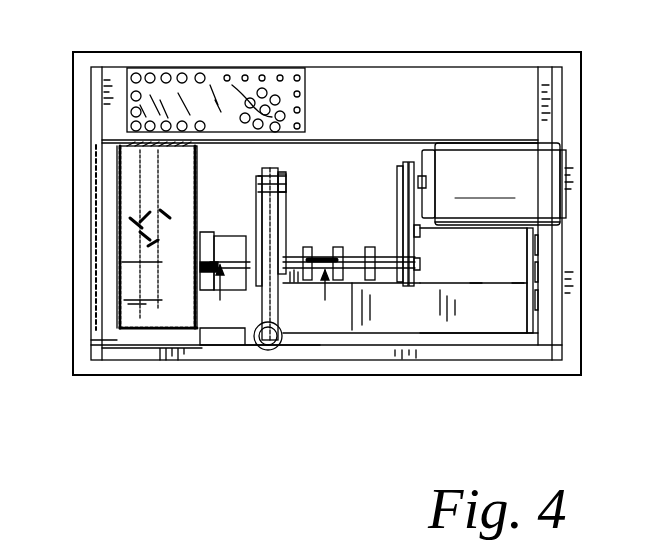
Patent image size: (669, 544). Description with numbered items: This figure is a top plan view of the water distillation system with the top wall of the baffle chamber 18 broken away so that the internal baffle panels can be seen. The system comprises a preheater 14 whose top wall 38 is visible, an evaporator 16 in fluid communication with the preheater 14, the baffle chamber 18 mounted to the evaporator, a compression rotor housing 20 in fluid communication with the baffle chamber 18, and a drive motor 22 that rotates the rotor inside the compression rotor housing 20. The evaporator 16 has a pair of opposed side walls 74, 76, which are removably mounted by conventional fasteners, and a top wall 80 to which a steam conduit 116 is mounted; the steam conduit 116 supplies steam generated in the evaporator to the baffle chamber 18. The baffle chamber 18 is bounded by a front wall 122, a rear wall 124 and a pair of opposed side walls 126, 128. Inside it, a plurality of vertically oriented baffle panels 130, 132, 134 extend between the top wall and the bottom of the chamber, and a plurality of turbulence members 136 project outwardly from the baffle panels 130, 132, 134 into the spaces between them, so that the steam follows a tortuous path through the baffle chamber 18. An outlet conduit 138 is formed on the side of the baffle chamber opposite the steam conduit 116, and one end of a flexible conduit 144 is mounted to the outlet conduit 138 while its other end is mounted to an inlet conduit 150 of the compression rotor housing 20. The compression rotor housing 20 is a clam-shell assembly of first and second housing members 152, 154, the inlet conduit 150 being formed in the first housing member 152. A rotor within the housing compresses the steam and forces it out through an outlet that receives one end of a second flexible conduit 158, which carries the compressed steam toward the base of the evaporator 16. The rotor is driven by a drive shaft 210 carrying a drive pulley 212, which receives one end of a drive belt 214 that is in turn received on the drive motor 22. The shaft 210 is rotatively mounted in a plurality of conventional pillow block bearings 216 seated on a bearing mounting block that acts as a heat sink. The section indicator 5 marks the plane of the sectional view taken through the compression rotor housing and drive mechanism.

The section indicator 5 is at (277, 290).
The preheater 14 is at (305, 92).
The evaporator 16 is at (490, 335).
The baffle chamber 18 is at (127, 342).
The compression rotor housing 20 is at (282, 202).
The drive motor 22 is at (515, 162).
The top wall 38 is at (177, 59).
The side wall 74 is at (102, 340).
The side wall 76 is at (575, 310).
The top wall 80 is at (527, 251).
The steam conduit 116 is at (130, 300).
The front wall 122 is at (160, 362).
The rear wall 124 is at (145, 172).
The side wall 126 is at (158, 178).
The side wall 128 is at (186, 104).
The baffle panel 130 is at (160, 262).
The baffle panel 132 is at (157, 248).
The baffle panel 134 is at (210, 372).
The turbulence members 136 is at (150, 235).
The outlet conduit 138 is at (207, 234).
The flexible conduit 144 is at (231, 236).
The inlet conduit 150 is at (255, 372).
The first housing member 152 is at (258, 156).
The second housing member 154 is at (282, 188).
The flexible conduit 158 is at (286, 337).
The drive shaft 210 is at (392, 281).
The drive pulley 212 is at (428, 262).
The drive belt 214 is at (428, 234).
The pillow block bearings 216 is at (338, 247).